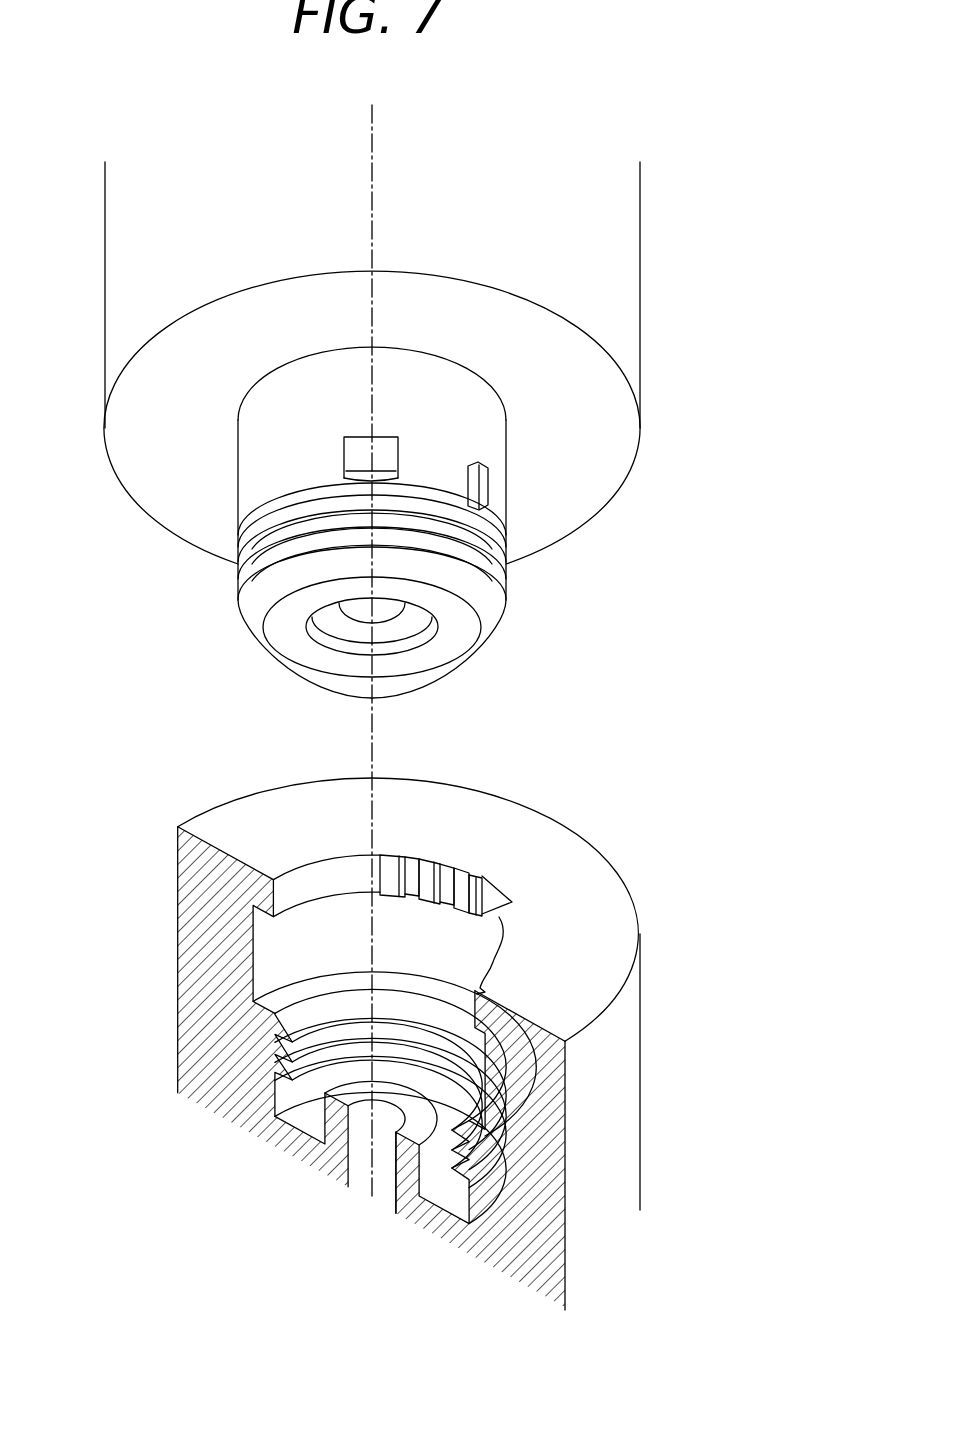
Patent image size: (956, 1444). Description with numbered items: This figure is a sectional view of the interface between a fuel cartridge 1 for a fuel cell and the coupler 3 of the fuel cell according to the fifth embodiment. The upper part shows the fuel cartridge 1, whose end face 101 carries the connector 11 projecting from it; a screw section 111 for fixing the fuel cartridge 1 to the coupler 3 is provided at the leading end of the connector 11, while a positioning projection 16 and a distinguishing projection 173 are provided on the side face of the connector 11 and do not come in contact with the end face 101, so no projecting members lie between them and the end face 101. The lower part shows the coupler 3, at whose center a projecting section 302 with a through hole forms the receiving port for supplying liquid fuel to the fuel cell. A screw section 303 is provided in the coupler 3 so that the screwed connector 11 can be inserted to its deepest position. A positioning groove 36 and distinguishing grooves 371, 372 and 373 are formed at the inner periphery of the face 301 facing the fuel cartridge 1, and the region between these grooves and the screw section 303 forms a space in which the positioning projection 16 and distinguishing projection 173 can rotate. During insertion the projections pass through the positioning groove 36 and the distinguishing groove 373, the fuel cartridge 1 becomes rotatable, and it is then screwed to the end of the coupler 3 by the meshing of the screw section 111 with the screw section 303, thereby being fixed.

The fuel cartridge 1 is at (528, 163).
The end face 101 is at (274, 288).
The connector 11 is at (263, 392).
The screw section 111 is at (508, 584).
The positioning projection 16 is at (358, 440).
The distinguishing projection 173 is at (482, 477).
The coupler 3 is at (152, 1034).
The face 301 is at (258, 798).
The projecting section 302 is at (390, 1118).
The screw section 303 is at (285, 1062).
The positioning groove 36 is at (510, 897).
The distinguishing groove 371 is at (470, 873).
The distinguishing groove 372 is at (432, 857).
The distinguishing groove 373 is at (393, 850).